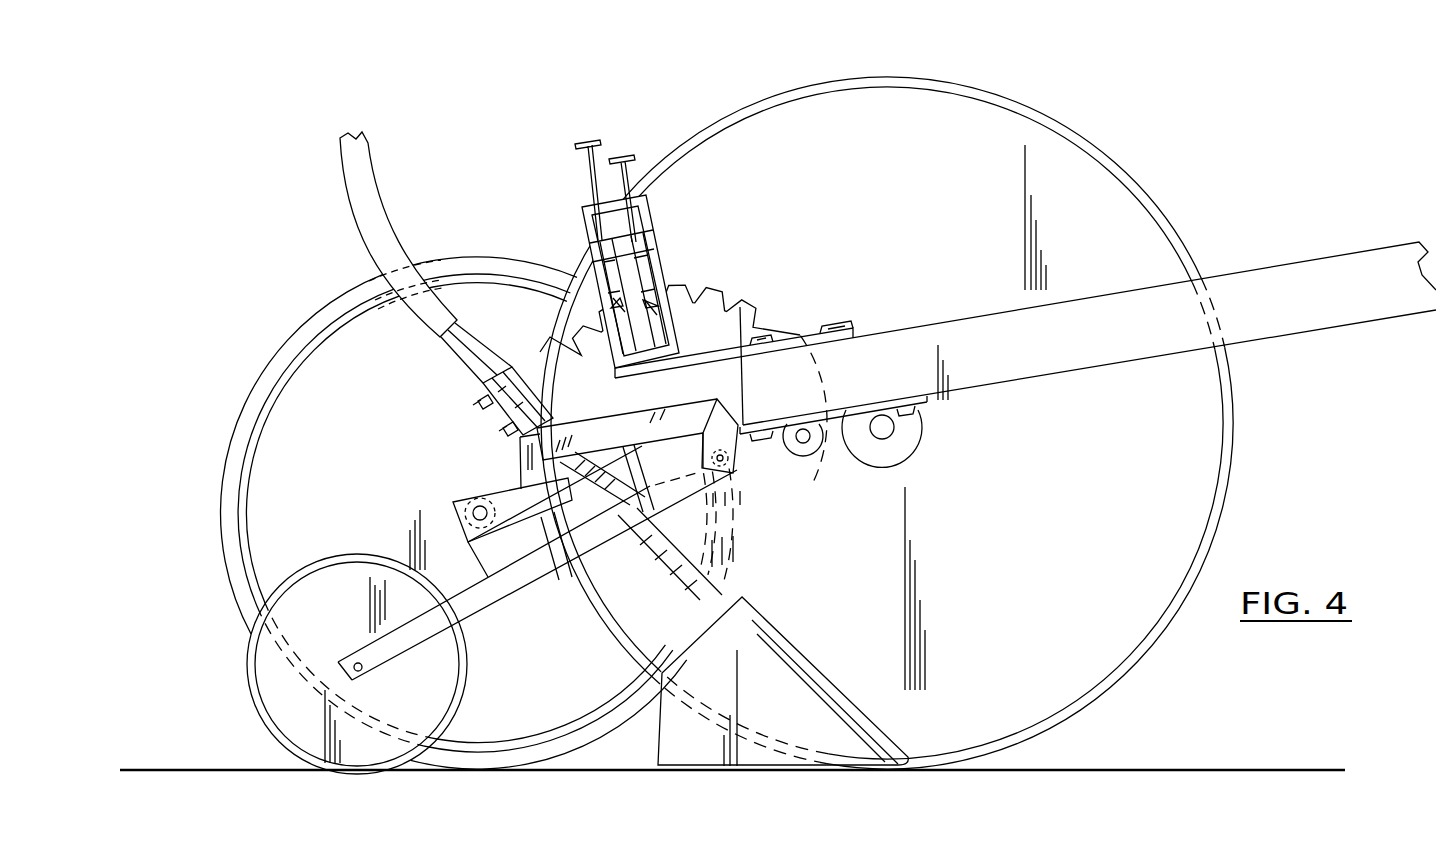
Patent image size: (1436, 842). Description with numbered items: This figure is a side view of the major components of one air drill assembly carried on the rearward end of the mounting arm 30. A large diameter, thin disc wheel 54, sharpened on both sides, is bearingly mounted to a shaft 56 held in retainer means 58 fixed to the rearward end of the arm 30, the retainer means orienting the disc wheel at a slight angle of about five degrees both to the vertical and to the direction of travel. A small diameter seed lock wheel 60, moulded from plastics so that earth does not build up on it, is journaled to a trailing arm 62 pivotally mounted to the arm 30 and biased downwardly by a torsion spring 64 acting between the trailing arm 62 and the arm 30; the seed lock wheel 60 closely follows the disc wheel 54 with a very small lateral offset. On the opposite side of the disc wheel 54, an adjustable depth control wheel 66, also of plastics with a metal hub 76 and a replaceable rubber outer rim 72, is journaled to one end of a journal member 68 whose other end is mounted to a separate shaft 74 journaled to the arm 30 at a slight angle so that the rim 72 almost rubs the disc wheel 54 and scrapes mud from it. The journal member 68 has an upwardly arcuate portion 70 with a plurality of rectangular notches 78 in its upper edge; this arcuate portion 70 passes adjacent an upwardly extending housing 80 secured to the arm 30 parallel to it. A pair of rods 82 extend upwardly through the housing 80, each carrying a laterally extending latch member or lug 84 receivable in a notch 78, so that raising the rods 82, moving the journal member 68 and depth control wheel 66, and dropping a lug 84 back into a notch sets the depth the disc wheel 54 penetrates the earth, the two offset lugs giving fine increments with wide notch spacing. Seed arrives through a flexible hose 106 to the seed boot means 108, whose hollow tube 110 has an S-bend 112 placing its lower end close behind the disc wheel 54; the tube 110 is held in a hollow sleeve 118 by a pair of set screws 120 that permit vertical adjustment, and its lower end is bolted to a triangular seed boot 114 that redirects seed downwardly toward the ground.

The arm 30 is at (1326, 272).
The disc wheel 54 is at (1062, 120).
The shaft 56 is at (884, 427).
The retainer means 58 is at (905, 445).
The seed lock wheel 60 is at (249, 656).
The trailing arm 62 is at (478, 598).
The torsion spring 64 is at (736, 478).
The adjustable depth control wheel 66 is at (313, 318).
The journal member 68 is at (488, 501).
The arcuate portion 70 is at (770, 310).
The outer rim 72 is at (234, 497).
The shaft 74 is at (808, 446).
The metal hub 76 is at (450, 500).
The rectangular notches 78 is at (742, 300).
The housing 80 is at (658, 224).
The rods 82 is at (597, 163).
The latch member or lug 84 is at (612, 256).
The flexible hose 106 is at (350, 194).
The seed boot means 108 is at (455, 347).
The hollow tube 110 is at (478, 346).
The S-bend 112 is at (490, 550).
The triangular seed boot 114 is at (877, 724).
The hollow sleeve 118 is at (484, 388).
The set screws 120 is at (479, 432).